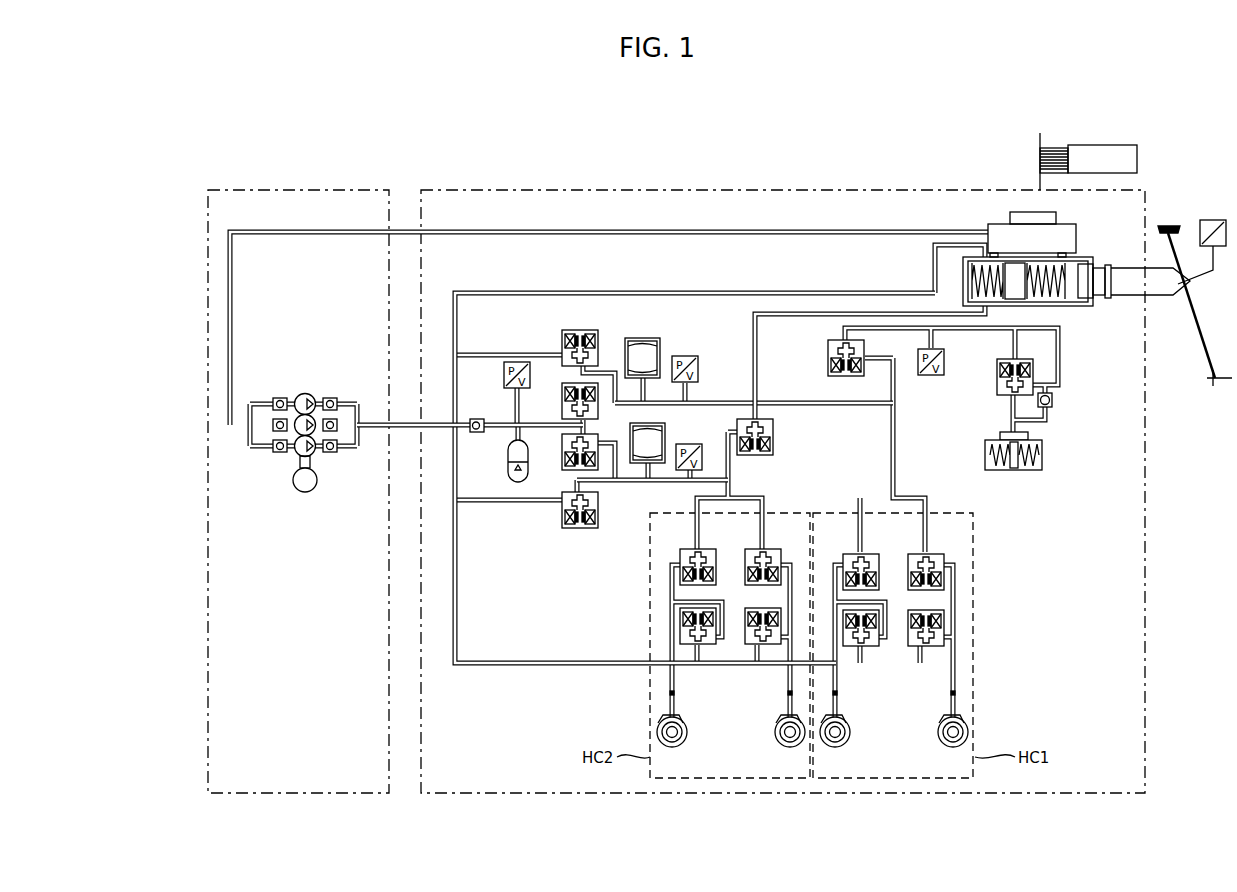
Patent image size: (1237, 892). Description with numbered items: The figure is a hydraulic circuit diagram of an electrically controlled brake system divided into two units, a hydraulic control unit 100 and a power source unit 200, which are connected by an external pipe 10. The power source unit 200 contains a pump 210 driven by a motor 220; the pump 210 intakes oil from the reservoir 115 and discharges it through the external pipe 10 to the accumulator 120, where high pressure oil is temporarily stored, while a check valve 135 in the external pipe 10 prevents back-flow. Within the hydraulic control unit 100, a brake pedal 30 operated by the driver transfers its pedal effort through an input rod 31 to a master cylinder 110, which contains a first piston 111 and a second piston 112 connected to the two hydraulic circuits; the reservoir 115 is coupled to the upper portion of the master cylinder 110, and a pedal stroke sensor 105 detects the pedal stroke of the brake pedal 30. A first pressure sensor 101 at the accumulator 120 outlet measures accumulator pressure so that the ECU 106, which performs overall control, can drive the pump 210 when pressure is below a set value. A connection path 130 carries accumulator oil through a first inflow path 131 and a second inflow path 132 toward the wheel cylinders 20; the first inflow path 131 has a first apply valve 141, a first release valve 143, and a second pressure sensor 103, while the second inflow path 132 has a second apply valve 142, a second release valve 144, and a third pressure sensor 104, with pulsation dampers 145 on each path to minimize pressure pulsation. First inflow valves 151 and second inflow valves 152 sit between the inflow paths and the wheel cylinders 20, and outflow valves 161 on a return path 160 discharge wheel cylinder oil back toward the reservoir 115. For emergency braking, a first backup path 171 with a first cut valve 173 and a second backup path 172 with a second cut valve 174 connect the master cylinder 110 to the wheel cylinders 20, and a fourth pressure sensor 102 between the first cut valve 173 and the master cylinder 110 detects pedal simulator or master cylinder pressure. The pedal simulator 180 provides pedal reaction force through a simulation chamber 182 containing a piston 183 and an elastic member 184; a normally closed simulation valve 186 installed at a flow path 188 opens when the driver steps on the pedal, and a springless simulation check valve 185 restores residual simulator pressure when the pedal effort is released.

The hydraulic control unit 100 is at (605, 190).
The power source unit 200 is at (300, 190).
The external pipe 10 is at (400, 430).
The wheel cylinders 20 is at (686, 716).
The brake pedal 30 is at (1195, 326).
The input rod 31 is at (1165, 294).
The first pressure sensor 101 is at (505, 365).
The fourth pressure sensor 102 is at (925, 377).
The second pressure sensor 103 is at (697, 358).
The third pressure sensor 104 is at (690, 445).
The pedal stroke sensor 105 is at (1213, 220).
The ECU 106 is at (1137, 160).
The master cylinder 110 is at (1068, 276).
The first piston 111 is at (1080, 270).
The second piston 112 is at (1018, 268).
The reservoir 115 is at (1050, 218).
The accumulator 120 is at (518, 484).
The connection path 130 is at (470, 433).
The first inflow path 131 is at (735, 405).
The second inflow path 132 is at (662, 483).
The check valve 135 is at (477, 418).
The first apply valve 141 is at (562, 398).
The second apply valve 142 is at (565, 460).
The first release valve 143 is at (580, 330).
The second release valve 144 is at (580, 530).
The pulsation dampers 145 is at (652, 423).
The first inflow valves 151 is at (928, 562).
The second inflow valves 152 is at (760, 556).
The return path 160 is at (560, 665).
The outflow valves 161 is at (780, 652).
The first backup path 171 is at (962, 332).
The second backup path 172 is at (792, 313).
The first cut valve 173 is at (830, 357).
The second cut valve 174 is at (778, 440).
The pedal simulator 180 is at (1044, 480).
The simulation chamber 182 is at (1040, 457).
The piston 183 is at (1040, 442).
The elastic member 184 is at (1028, 471).
The simulation check valve 185 is at (1053, 401).
The simulation valve 186 is at (1000, 362).
The flow path 188 is at (1062, 366).
The pump 210 is at (305, 393).
The motor 220 is at (303, 493).